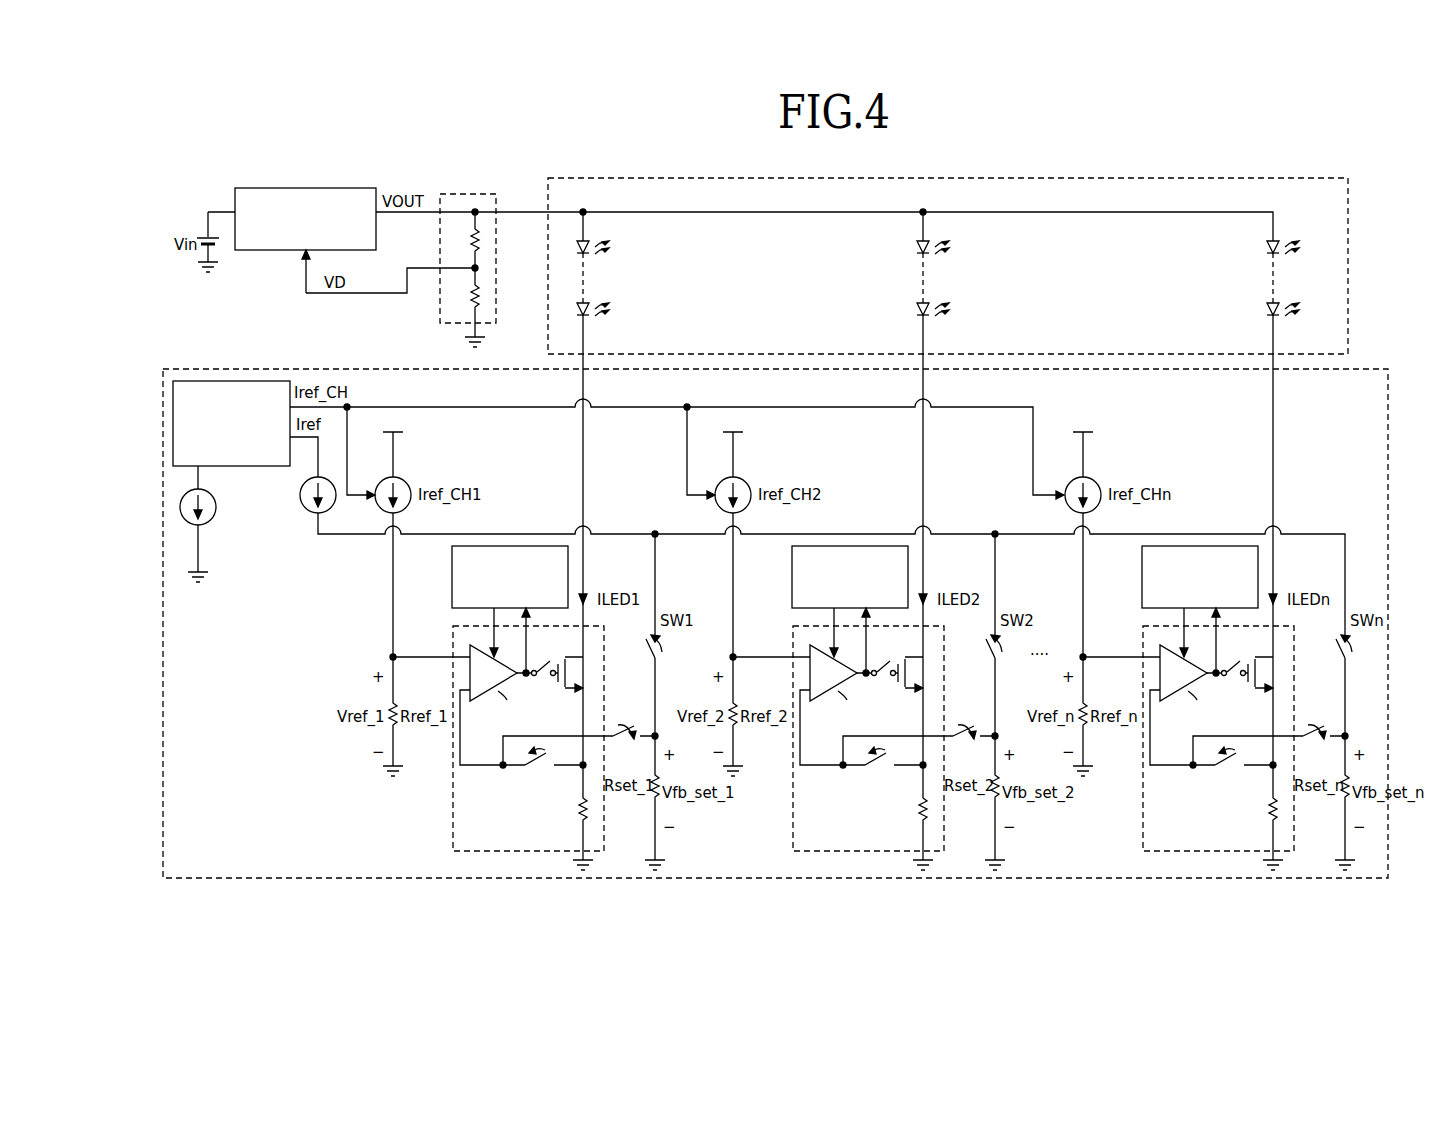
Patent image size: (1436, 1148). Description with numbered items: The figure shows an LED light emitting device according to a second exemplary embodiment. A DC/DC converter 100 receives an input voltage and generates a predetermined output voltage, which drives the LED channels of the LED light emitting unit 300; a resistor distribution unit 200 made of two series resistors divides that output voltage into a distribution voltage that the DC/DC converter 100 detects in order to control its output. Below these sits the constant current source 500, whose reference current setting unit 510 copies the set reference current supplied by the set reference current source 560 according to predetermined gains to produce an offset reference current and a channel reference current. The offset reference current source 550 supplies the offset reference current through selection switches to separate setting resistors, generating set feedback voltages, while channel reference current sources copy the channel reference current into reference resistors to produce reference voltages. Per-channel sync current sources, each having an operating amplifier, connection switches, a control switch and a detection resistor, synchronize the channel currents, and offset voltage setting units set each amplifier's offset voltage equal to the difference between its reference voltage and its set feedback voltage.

The DC/DC converter 100 is at (300, 188).
The resistor distribution unit 200 is at (469, 194).
The LED light emitting unit 300 is at (926, 178).
The constant current source 500 is at (506, 368).
The reference current setting unit 510 is at (231, 381).
The offset reference current source 550 is at (306, 513).
The set reference current source 560 is at (191, 527).